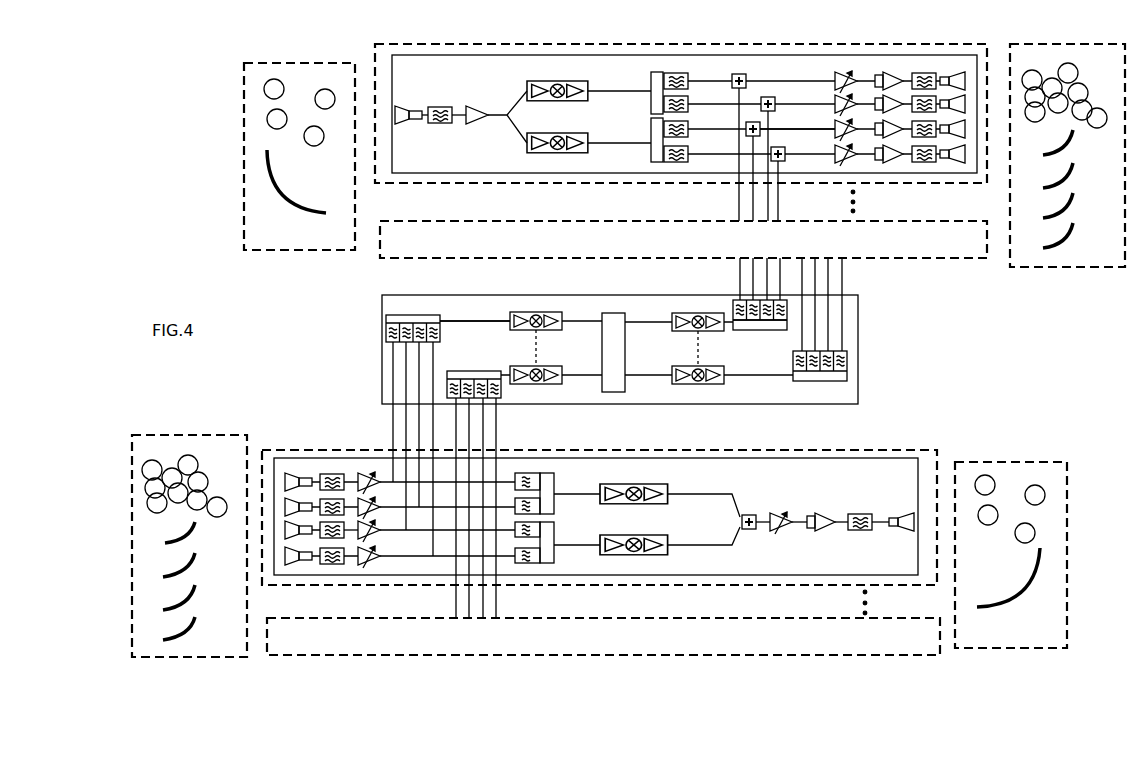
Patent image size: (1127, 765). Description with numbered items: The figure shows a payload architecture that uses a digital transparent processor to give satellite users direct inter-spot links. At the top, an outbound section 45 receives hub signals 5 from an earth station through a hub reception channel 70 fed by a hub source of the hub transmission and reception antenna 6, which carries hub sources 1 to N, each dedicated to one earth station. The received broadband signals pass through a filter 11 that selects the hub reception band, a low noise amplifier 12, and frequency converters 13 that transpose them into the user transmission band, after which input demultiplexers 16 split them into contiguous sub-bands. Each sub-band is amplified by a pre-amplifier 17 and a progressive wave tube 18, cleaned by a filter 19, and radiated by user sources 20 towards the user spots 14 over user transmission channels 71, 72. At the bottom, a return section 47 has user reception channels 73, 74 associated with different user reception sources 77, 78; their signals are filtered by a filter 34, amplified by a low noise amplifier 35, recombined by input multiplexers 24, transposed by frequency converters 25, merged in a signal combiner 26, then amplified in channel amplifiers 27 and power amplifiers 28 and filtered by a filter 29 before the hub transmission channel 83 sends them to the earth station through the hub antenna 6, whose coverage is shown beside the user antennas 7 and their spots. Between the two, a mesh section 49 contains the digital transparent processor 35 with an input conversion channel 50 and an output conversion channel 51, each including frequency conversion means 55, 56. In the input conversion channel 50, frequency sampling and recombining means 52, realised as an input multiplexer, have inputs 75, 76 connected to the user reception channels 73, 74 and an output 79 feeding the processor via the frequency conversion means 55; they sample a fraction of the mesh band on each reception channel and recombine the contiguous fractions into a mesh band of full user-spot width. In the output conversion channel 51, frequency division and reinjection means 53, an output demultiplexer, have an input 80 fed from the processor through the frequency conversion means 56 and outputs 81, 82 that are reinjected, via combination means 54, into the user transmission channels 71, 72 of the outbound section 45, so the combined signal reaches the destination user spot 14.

The hub reception source 1 is at (398, 107).
The hub signals 5 is at (333, 106).
The hub transmission and reception antenna 6 is at (283, 185).
The user transmission and reception antennas 7 is at (1073, 223).
The filter 11 is at (437, 107).
The low noise amplifier 12 is at (475, 120).
The frequency converters 13 is at (540, 133).
The user spots 14 is at (1077, 74).
The input demultiplexers IMUX 16 is at (660, 128).
The pre-amplifier 17 is at (853, 145).
The progressive wave tube 18 is at (898, 148).
The filter 19 is at (928, 147).
The user sources 20 is at (959, 147).
The input multiplexers IMUX 24 is at (554, 541).
The frequency converters 25 is at (668, 536).
The signal combiner 26 is at (752, 514).
The channel amplifiers 27 is at (779, 533).
The power amplifiers 28 is at (826, 531).
The filter 29 is at (873, 530).
The hub transmission and reception source N is at (899, 514).
The filter 34 is at (334, 548).
The digital transparent processor 35 is at (602, 360).
The outbound section 45 is at (385, 44).
The return section 47 is at (337, 618).
The mesh section 49 is at (858, 313).
The input conversion channel 50 is at (465, 321).
The output conversion channel 51 is at (645, 322).
The frequency sampling and recombining means 52 is at (410, 315).
The frequency division and reinjection means 53 is at (793, 372).
The combination means 54 is at (739, 74).
The frequency conversion means 55 is at (530, 312).
The frequency conversion means 56 is at (675, 366).
The hub reception channel 70 is at (465, 106).
The user transmission channel 71 is at (807, 81).
The user transmission channel 72 is at (797, 129).
The user reception channel 73 is at (515, 473).
The user reception channel 74 is at (496, 440).
The input 75 is at (393, 360).
The input 76 is at (406, 378).
The user reception source 77 is at (290, 458).
The user reception source 78 is at (285, 531).
The output 79 is at (443, 315).
The input 80 is at (731, 331).
The output 81 is at (740, 268).
The output 82 is at (753, 195).
The hub transmission channel 83 is at (801, 522).